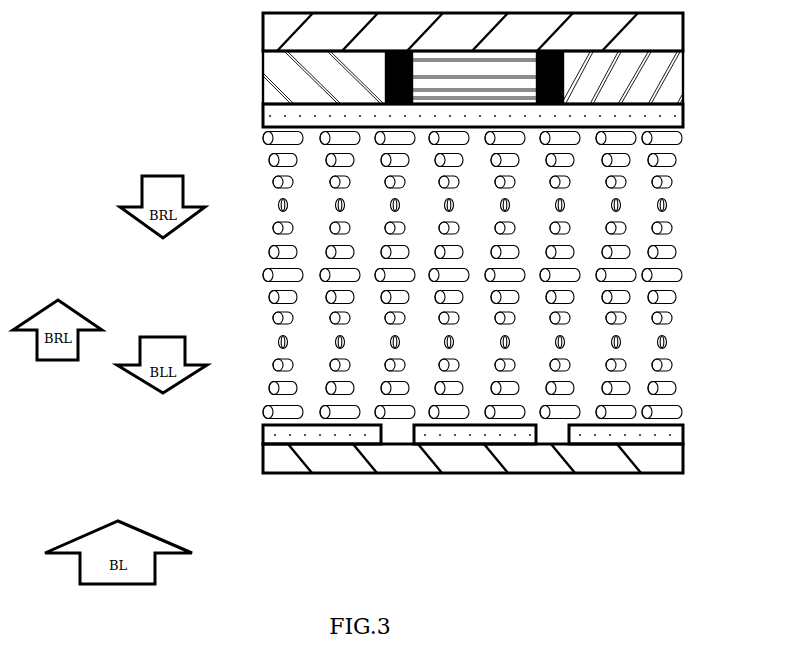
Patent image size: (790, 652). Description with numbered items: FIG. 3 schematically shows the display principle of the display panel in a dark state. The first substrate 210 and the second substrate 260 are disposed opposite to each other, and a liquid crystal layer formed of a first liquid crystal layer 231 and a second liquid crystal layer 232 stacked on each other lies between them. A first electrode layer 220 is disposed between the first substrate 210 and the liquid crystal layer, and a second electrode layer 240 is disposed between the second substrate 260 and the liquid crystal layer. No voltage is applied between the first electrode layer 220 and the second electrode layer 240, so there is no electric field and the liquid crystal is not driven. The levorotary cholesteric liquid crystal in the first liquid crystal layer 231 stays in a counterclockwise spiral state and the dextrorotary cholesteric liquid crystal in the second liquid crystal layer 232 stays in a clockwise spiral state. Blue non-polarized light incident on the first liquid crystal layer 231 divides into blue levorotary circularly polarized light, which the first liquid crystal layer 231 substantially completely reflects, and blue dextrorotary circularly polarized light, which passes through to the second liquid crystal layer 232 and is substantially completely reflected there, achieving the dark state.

The first substrate 210 is at (684, 461).
The first electrode layer 220 is at (684, 433).
The first liquid crystal layer 231 is at (668, 343).
The second liquid crystal layer 232 is at (668, 206).
The second electrode layer 240 is at (684, 112).
The second substrate 260 is at (684, 34).